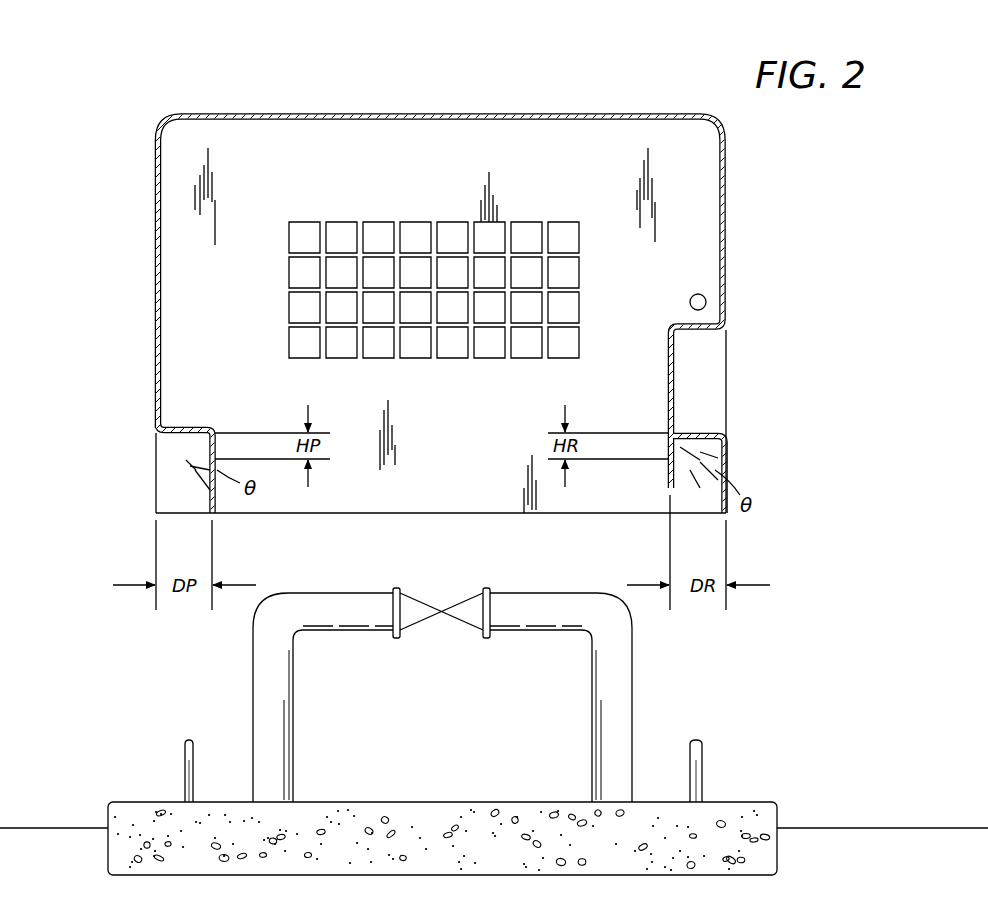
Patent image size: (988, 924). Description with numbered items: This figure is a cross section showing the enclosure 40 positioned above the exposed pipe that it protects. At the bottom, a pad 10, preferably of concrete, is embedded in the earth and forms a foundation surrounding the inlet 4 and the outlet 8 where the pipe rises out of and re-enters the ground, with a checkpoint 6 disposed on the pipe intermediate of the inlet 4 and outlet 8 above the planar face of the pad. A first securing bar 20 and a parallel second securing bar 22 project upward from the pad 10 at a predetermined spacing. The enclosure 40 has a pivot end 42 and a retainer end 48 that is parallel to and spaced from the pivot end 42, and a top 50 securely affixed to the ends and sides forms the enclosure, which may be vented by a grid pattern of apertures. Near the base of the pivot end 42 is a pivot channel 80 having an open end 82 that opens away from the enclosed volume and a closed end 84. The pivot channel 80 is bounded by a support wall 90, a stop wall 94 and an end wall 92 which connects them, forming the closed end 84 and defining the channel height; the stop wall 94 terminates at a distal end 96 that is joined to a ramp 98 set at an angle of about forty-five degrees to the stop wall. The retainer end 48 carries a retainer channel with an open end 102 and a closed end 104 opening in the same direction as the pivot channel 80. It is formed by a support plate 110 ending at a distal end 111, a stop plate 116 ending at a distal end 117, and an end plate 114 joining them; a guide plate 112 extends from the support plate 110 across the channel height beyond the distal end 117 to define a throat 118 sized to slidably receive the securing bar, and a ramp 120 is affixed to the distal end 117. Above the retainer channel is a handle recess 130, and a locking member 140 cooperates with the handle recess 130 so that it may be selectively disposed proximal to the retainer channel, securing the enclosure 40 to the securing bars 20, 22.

The enclosure 40 is at (183, 92).
The top 50 is at (546, 112).
The retainer end 48 is at (726, 190).
The pivot end 42 is at (156, 224).
The locking member 140 is at (706, 297).
The handle recess 130 is at (700, 350).
The pivot channel 80 is at (186, 442).
The open end 82 is at (157, 440).
The closed end 84 is at (208, 430).
The support wall 90 is at (177, 430).
The end wall 92 is at (220, 500).
The stop wall 94 is at (190, 463).
The distal end 96 is at (190, 467).
The ramp 98 is at (192, 472).
The open end 102 is at (672, 441).
The closed end 104 is at (729, 434).
The support plate 110 is at (700, 433).
The distal end 111 is at (680, 433).
The guide plate 112 is at (667, 470).
The end plate 114 is at (706, 462).
The stop plate 116 is at (706, 452).
The distal end 117 is at (690, 475).
The throat 118 is at (681, 447).
The ramp 120 is at (708, 490).
The pad 10 is at (107, 788).
The inlet 4 is at (633, 802).
The checkpoint 6 is at (414, 592).
The outlet 8 is at (297, 802).
The first securing bar 20 is at (184, 754).
The second securing bar 22 is at (703, 755).